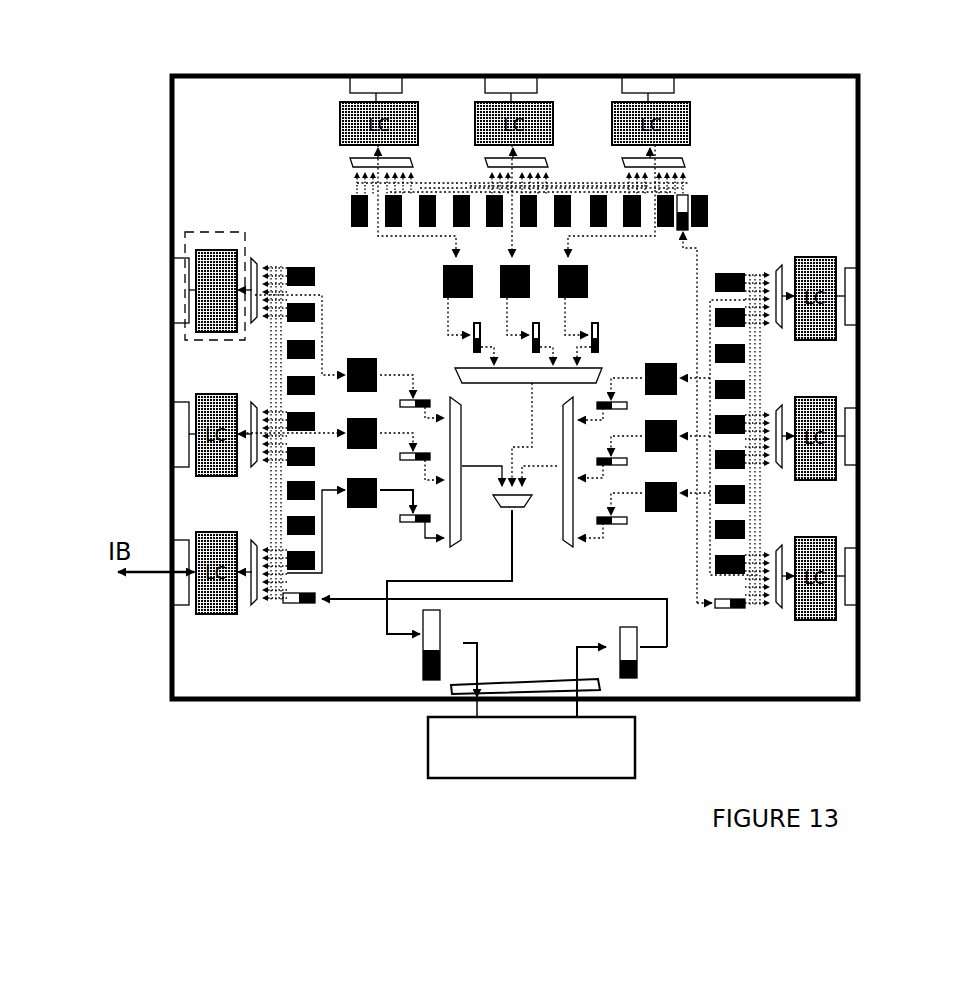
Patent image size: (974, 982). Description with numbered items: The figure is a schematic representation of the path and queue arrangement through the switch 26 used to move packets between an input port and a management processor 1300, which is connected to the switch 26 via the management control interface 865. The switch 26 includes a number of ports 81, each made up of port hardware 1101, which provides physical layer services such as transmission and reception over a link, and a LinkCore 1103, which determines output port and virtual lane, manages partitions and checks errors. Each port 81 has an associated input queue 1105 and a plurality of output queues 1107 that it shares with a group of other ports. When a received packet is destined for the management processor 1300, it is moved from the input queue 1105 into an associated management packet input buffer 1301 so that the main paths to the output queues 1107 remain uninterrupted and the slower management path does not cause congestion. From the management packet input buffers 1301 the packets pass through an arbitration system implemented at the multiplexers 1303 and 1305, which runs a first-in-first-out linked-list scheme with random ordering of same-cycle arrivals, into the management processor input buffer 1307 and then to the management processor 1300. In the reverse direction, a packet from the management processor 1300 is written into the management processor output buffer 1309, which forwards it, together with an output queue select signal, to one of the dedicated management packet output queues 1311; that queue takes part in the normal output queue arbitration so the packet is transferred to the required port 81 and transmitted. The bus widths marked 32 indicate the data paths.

The switch 26 is at (240, 77).
The port 81 is at (199, 226).
The port hardware 1101 is at (174, 234).
The LinkCore 1103 is at (191, 326).
The input queue 1105 is at (598, 282).
The output queue 1107 is at (748, 272).
The management packet input buffer 1301 is at (400, 449).
The multiplexer 1303 is at (453, 547).
The multiplexer 1305 is at (528, 510).
The management processor input buffer 1307 is at (421, 677).
The management processor output buffer 1309 is at (641, 660).
The management packet output queue 1311 is at (285, 607).
The management control interface 865 is at (603, 689).
The management processor 1300 is at (637, 762).
The 32-bit bus 32 is at (612, 591).